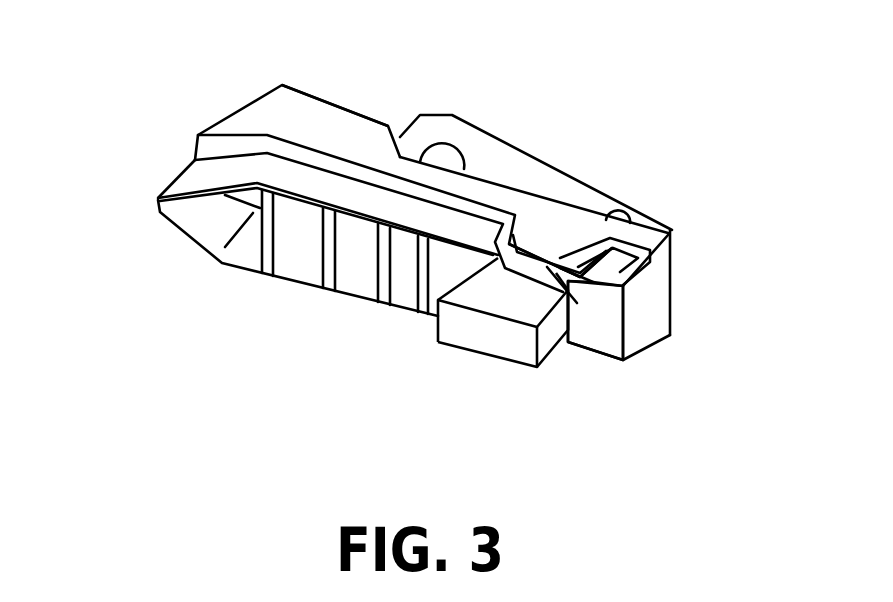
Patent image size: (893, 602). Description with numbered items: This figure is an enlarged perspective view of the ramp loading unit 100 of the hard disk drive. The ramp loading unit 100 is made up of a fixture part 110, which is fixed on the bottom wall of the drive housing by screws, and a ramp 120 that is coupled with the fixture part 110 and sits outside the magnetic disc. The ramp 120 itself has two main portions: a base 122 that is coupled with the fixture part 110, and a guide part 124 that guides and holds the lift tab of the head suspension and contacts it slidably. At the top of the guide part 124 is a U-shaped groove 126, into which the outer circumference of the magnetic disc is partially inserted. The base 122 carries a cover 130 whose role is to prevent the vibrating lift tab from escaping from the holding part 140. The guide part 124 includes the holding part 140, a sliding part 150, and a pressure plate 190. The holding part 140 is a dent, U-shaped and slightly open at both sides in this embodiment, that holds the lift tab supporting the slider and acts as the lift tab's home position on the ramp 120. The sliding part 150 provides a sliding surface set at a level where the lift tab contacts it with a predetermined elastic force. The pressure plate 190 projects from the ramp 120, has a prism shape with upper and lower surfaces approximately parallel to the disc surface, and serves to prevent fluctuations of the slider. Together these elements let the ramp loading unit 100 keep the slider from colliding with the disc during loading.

The ramp loading unit 100 is at (491, 36).
The fixture part 110 is at (500, 160).
The ramp 120 is at (213, 105).
The base 122 is at (317, 120).
The guide part 124 is at (640, 265).
The U-shaped groove 126 is at (147, 203).
The cover 130 is at (558, 240).
The holding part 140 is at (555, 272).
The sliding part 150 is at (435, 332).
The pressure plate 190 is at (498, 338).